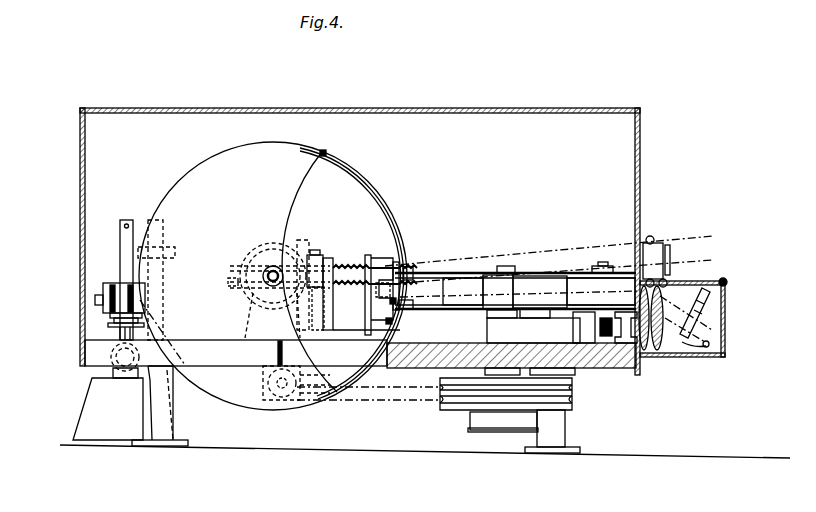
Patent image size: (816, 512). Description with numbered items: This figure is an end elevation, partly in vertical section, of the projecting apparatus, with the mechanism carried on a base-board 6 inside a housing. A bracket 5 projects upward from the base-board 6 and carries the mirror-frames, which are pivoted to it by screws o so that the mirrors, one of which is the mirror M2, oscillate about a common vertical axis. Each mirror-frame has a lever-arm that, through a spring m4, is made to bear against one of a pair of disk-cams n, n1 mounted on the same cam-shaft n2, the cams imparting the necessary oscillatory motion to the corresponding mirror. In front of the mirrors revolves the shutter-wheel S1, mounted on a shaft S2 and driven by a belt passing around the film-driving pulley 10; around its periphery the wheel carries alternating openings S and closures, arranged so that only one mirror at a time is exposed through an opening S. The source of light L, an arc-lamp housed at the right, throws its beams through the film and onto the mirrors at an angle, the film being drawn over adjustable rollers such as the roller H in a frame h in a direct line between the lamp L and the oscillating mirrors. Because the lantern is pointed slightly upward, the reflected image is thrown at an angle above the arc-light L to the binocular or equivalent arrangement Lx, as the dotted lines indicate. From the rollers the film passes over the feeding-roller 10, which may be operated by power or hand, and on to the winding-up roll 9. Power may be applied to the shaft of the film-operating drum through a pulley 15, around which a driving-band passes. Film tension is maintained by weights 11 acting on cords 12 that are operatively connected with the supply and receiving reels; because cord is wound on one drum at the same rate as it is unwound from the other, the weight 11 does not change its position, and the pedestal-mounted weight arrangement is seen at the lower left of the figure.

The base-board 6 is at (236, 353).
The weights 11 is at (130, 373).
The cords 12 is at (133, 295).
The shutter-wheel S1 is at (273, 276).
The openings S is at (389, 212).
The shaft S2 is at (262, 277).
The screws o is at (397, 256).
The disk-cam n1 is at (287, 346).
The disk-cam n is at (312, 258).
The cam-shaft n2 is at (313, 252).
The spring m4 is at (338, 282).
The mirror M2 is at (366, 295).
The bracket 5 is at (334, 336).
The winding-up roll 9 is at (433, 273).
The lens tube a is at (478, 292).
The feeding-roller 10 is at (574, 292).
The adjustable roller H is at (519, 273).
The frame h is at (487, 322).
The pulley 15 is at (438, 415).
The source of light L is at (714, 312).
The binocular or equivalent arrangement Lx is at (656, 250).